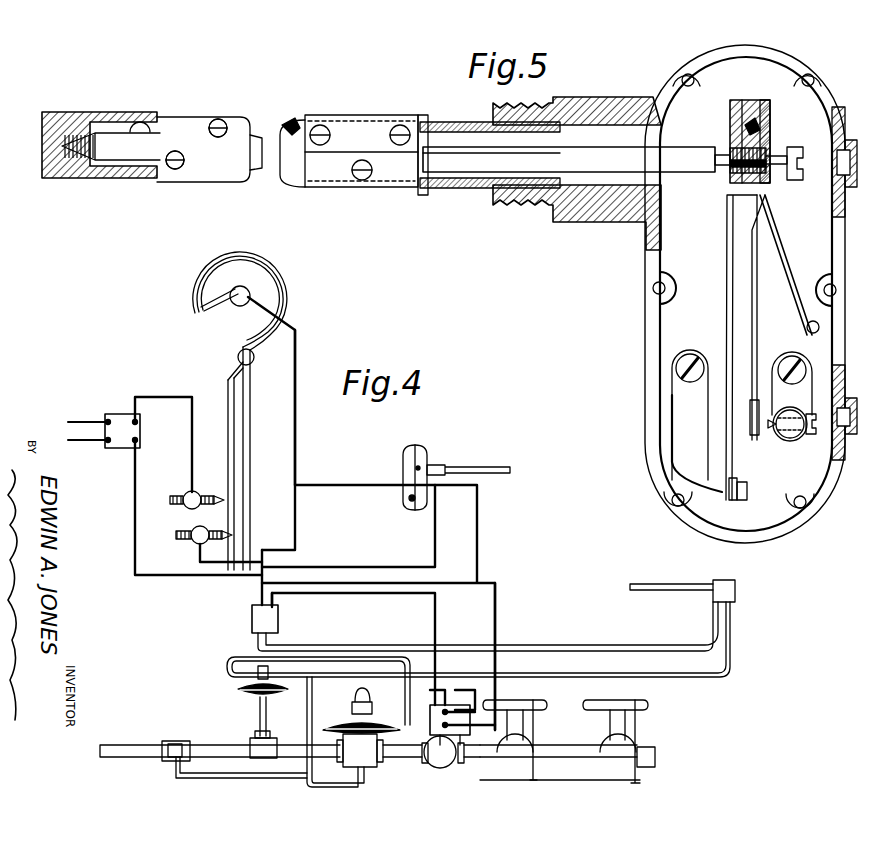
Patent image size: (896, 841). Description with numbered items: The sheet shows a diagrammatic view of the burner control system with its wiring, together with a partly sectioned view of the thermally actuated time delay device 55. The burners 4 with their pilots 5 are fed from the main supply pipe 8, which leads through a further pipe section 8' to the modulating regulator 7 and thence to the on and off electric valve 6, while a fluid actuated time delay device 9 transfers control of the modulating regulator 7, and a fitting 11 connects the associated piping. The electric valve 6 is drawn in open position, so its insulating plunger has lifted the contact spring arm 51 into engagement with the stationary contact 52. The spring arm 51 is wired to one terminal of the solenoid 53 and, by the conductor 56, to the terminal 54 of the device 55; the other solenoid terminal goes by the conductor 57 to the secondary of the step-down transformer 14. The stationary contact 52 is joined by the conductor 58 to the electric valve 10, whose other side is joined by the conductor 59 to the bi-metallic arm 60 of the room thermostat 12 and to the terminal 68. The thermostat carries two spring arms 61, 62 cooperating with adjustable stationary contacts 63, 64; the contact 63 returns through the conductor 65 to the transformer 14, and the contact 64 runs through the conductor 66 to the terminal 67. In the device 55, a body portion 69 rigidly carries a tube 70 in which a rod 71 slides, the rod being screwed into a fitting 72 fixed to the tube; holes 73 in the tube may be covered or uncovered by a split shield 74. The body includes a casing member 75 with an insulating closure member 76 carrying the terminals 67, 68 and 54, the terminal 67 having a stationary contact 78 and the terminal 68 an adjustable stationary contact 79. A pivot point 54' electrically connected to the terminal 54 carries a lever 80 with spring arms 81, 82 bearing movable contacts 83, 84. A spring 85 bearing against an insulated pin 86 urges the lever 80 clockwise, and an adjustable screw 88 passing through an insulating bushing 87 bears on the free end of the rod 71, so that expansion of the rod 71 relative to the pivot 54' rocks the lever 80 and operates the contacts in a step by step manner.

In FIG. 4, the burners 4 is at (650, 706).
In FIG. 4, the pilots 5 is at (640, 738).
In FIG. 5, the on and off electric valve 6 is at (752, 37).
In FIG. 4, the on and off electric valve 6 is at (442, 768).
In FIG. 4, the modulating regulator 7 is at (368, 764).
In FIG. 4, the main supply pipe 8 is at (220, 740).
In FIG. 4, the pipe section 8' is at (402, 774).
In FIG. 4, the fluid actuated time delay device 9 is at (248, 695).
In FIG. 4, the electric valve 10 is at (252, 620).
In FIG. 4, the pipe fitting 11 is at (738, 592).
In FIG. 4, the room thermostat 12 is at (192, 305).
In FIG. 4, the step-down transformer 14 is at (115, 450).
In FIG. 4, the contact spring arm 51 is at (448, 705).
In FIG. 4, the stationary contact 52 is at (440, 690).
In FIG. 4, the solenoid 53 is at (527, 722).
In FIG. 4, the terminal 54 is at (413, 468).
In FIG. 5, the pivot point 54' is at (786, 141).
In FIG. 5, the thermally actuated time delay device 55 is at (612, 240).
In FIG. 4, the thermally actuated time delay device 55 is at (445, 458).
In FIG. 4, the conductor 56 is at (479, 545).
In FIG. 4, the conductor 57 is at (498, 615).
In FIG. 4, the conductor 58 is at (368, 598).
In FIG. 4, the conductor 59 is at (297, 460).
In FIG. 4, the bi-metallic arm 60 is at (290, 296).
In FIG. 4, the spring arm 61 is at (228, 390).
In FIG. 4, the spring arm 62 is at (250, 446).
In FIG. 4, the adjustable stationary contact 63 is at (172, 498).
In FIG. 4, the adjustable stationary contact 64 is at (180, 535).
In FIG. 4, the conductor 65 is at (190, 420).
In FIG. 4, the conductor 66 is at (355, 562).
In FIG. 5, the terminal 67 is at (688, 378).
In FIG. 4, the terminal 67 is at (413, 503).
In FIG. 5, the terminal 68 is at (795, 376).
In FIG. 4, the terminal 68 is at (405, 495).
In FIG. 5, the body portion 69 is at (608, 100).
In FIG. 5, the tube 70 is at (240, 117).
In FIG. 5, the rod 71 is at (480, 172).
In FIG. 5, the fitting 72 is at (45, 178).
In FIG. 5, the holes 73 is at (214, 137).
In FIG. 5, the split shield 74 is at (312, 188).
In FIG. 5, the casing member 75 is at (646, 327).
In FIG. 5, the insulating closure member 76 is at (818, 244).
In FIG. 5, the stationary contact 78 is at (740, 482).
In FIG. 5, the adjustable stationary contact 79 is at (772, 432).
In FIG. 5, the lever 80 is at (745, 100).
In FIG. 5, the spring arm 81 is at (726, 250).
In FIG. 5, the spring arm 82 is at (757, 296).
In FIG. 5, the movable contact 83 is at (722, 498).
In FIG. 5, the movable contact 84 is at (755, 435).
In FIG. 5, the spring 85 is at (800, 270).
In FIG. 5, the insulated pin 86 is at (820, 327).
In FIG. 5, the insulating bushing 87 is at (730, 135).
In FIG. 5, the adjustable screw 88 is at (795, 180).